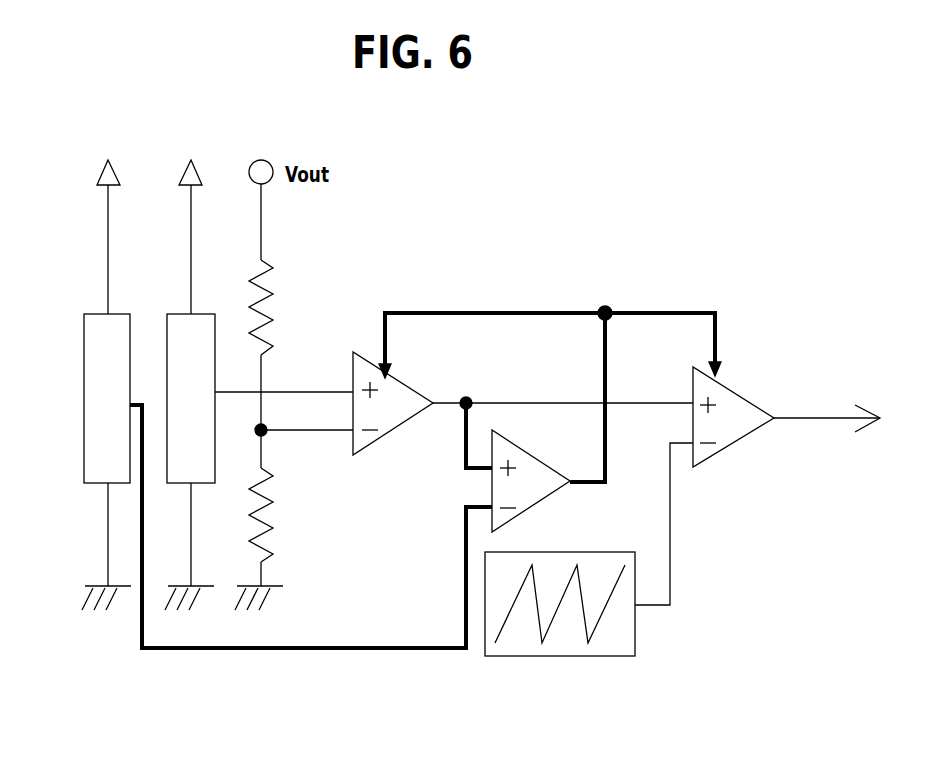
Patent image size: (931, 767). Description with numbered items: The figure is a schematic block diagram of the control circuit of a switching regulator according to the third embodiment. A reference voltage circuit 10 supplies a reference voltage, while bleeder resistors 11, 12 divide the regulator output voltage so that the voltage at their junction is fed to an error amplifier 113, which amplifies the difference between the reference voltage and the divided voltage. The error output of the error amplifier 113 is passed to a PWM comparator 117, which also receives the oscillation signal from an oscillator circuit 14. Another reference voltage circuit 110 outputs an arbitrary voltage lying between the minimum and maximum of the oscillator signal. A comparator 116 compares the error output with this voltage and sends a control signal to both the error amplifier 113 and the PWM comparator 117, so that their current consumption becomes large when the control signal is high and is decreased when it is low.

The reference voltage circuit 110 is at (84, 303).
The reference voltage circuit 10 is at (167, 302).
The bleeder resistor 11 is at (273, 313).
The bleeder resistor 12 is at (272, 522).
The error amplifier 113 is at (385, 443).
The comparator 116 is at (478, 485).
The oscillator circuit 14 is at (622, 630).
The PWM comparator 117 is at (735, 443).